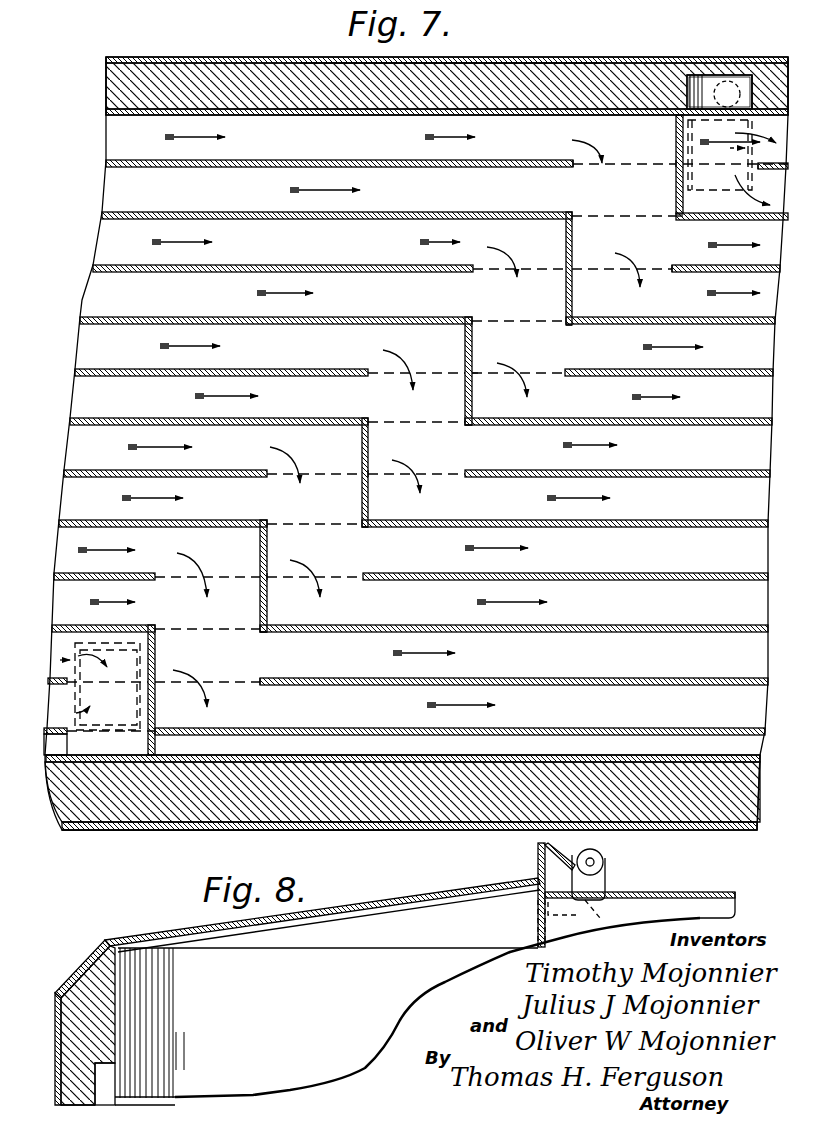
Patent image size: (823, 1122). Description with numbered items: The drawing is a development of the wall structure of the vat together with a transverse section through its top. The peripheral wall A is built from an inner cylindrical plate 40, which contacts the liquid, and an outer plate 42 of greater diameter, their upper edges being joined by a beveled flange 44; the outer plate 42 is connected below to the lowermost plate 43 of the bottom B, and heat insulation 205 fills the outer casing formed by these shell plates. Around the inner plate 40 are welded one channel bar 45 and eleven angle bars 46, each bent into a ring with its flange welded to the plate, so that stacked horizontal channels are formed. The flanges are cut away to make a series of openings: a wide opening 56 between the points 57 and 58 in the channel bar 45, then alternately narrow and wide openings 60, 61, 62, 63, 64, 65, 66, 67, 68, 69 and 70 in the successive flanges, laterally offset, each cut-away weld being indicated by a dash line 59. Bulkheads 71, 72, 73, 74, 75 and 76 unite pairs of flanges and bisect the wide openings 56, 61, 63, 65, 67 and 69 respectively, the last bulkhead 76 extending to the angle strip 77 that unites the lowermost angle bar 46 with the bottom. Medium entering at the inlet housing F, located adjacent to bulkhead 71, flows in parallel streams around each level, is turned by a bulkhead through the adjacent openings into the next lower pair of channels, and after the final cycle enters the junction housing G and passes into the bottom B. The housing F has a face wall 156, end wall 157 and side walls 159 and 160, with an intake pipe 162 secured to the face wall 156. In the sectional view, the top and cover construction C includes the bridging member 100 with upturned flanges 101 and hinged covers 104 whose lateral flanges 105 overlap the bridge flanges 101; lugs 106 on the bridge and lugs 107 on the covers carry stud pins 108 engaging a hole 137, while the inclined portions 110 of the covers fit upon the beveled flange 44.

In FIG. 7, the inner cylindrical plate 40 is at (752, 564).
In FIG. 8, the inner cylindrical plate 40 is at (118, 1040).
In FIG. 8, the outer plate 42 is at (58, 1022).
In FIG. 7, the lowermost plate 43 is at (293, 830).
In FIG. 7, the beveled flange 44 is at (487, 57).
In FIG. 8, the beveled flange 44 is at (60, 993).
In FIG. 7, the channel bar 45 is at (128, 160).
In FIG. 8, the channel bar 45 is at (77, 1090).
In FIG. 7, the angle bar 46 is at (135, 212).
In FIG. 7, the wide opening 56 is at (669, 166).
In FIG. 7, the point 57 is at (575, 168).
In FIG. 7, the point 58 is at (757, 170).
In FIG. 7, the dash line 59 is at (617, 163).
In FIG. 7, the opening 60 is at (648, 218).
In FIG. 7, the wide opening 61 is at (658, 272).
In FIG. 7, the narrow opening 62 is at (555, 322).
In FIG. 7, the wide opening 63 is at (458, 372).
In FIG. 7, the narrow opening 64 is at (453, 423).
In FIG. 7, the wide opening 65 is at (356, 476).
In FIG. 7, the narrow opening 66 is at (347, 524).
In FIG. 7, the wide opening 67 is at (248, 578).
In FIG. 7, the narrow opening 68 is at (248, 630).
In FIG. 7, the wide opening 69 is at (245, 683).
In FIG. 7, the narrow opening 70 is at (130, 730).
In FIG. 7, the bulkhead 71 is at (676, 139).
In FIG. 7, the bulkhead 72 is at (565, 245).
In FIG. 7, the bulkhead 73 is at (465, 349).
In FIG. 7, the bulkhead 74 is at (362, 448).
In FIG. 7, the bulkhead 75 is at (260, 548).
In FIG. 7, the bulkhead 76 is at (156, 662).
In FIG. 7, the angle strip 77 is at (760, 760).
In FIG. 8, the bridging member 100 is at (640, 882).
In FIG. 8, the flange 101 is at (540, 898).
In FIG. 8, the cover 104 is at (378, 894).
In FIG. 8, the lateral flange 105 is at (538, 843).
In FIG. 8, the lug 106 is at (600, 856).
In FIG. 8, the lug 107 is at (610, 877).
In FIG. 8, the stud pin 108 is at (605, 906).
In FIG. 8, the inclined portion 110 is at (86, 958).
In FIG. 8, the hole 137 is at (605, 864).
In FIG. 7, the face wall 156 is at (732, 191).
In FIG. 7, the end wall 157 is at (700, 76).
In FIG. 7, the side wall 159 is at (683, 97).
In FIG. 7, the side wall 160 is at (757, 97).
In FIG. 7, the intake pipe 162 is at (743, 60).
In FIG. 7, the insulation 205 is at (106, 84).
In FIG. 8, the insulation 205 is at (80, 1017).
In FIG. 7, the peripheral wall A is at (601, 72).
In FIG. 8, the peripheral wall A is at (55, 1060).
In FIG. 7, the bottom B is at (143, 830).
In FIG. 8, the top and cover construction C is at (735, 892).
In FIG. 7, the inlet housing F is at (732, 162).
In FIG. 7, the junction housing G is at (100, 686).